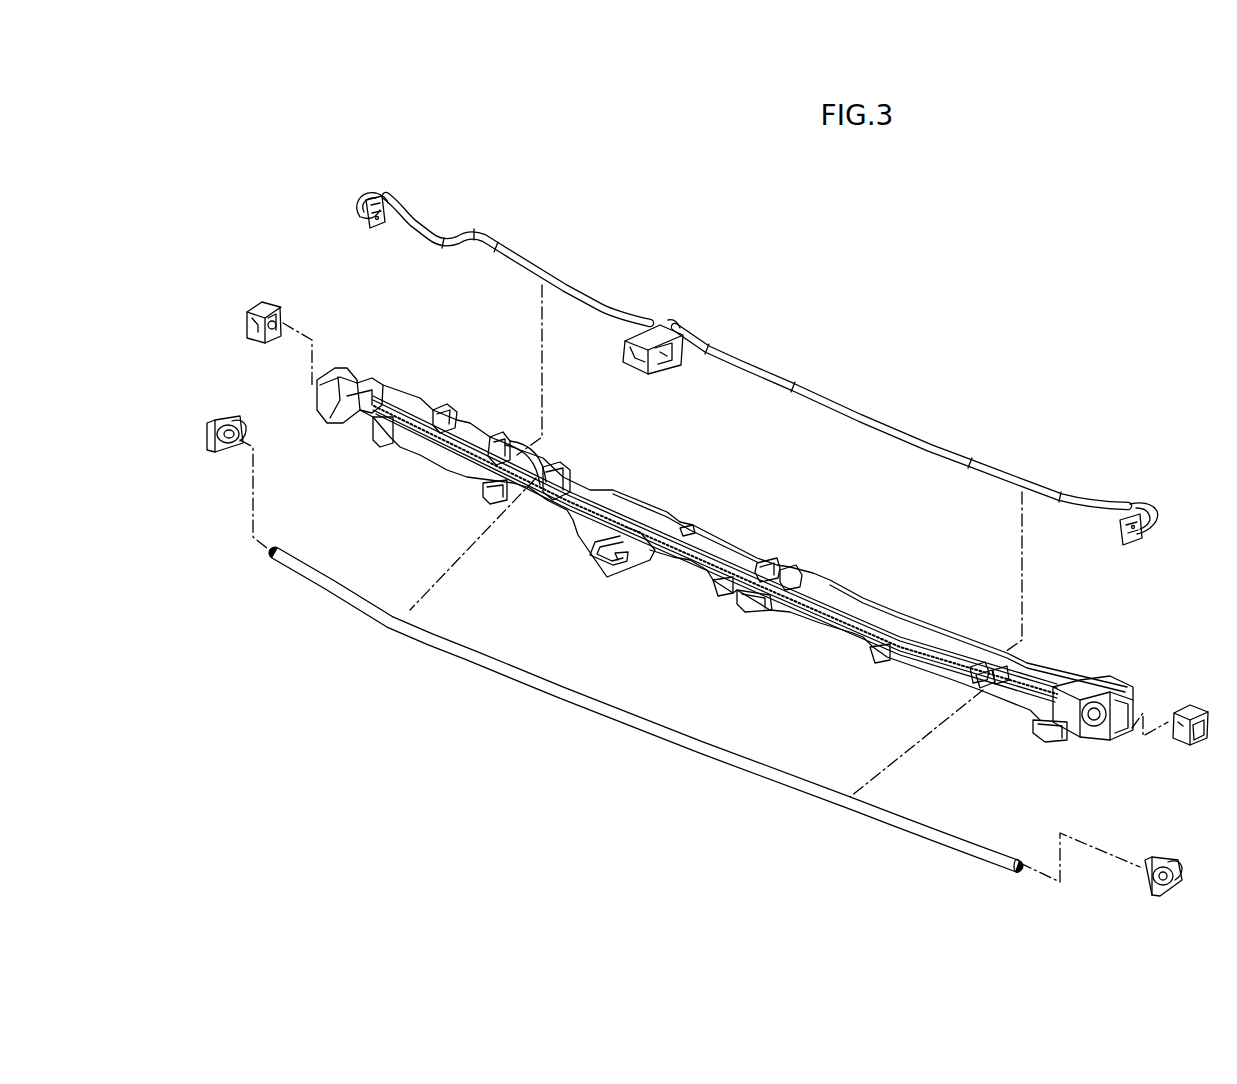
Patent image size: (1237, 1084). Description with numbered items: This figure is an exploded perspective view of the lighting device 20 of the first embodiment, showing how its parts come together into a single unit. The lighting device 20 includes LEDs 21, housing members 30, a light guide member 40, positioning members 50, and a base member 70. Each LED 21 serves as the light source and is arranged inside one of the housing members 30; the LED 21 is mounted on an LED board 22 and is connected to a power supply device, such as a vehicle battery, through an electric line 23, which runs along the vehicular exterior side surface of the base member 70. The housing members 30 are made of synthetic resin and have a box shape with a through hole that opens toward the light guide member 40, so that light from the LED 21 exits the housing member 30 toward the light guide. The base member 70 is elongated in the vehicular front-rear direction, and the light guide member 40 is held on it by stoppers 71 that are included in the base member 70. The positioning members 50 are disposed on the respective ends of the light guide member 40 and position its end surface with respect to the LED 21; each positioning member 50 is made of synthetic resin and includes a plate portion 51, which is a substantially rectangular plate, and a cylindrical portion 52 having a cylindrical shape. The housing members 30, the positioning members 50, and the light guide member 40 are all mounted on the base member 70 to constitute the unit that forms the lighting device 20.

The lighting device 20 is at (385, 168).
The LED 21 is at (378, 200).
The LED board 22 is at (368, 224).
The electric line 23 is at (515, 257).
The housing member 30 is at (257, 306).
The light guide member 40 is at (645, 730).
The positioning member 50 is at (228, 418).
The plate portion 51 is at (207, 438).
The cylindrical portion 52 is at (220, 448).
The base member 70 is at (725, 540).
The stopper 71 is at (768, 568).